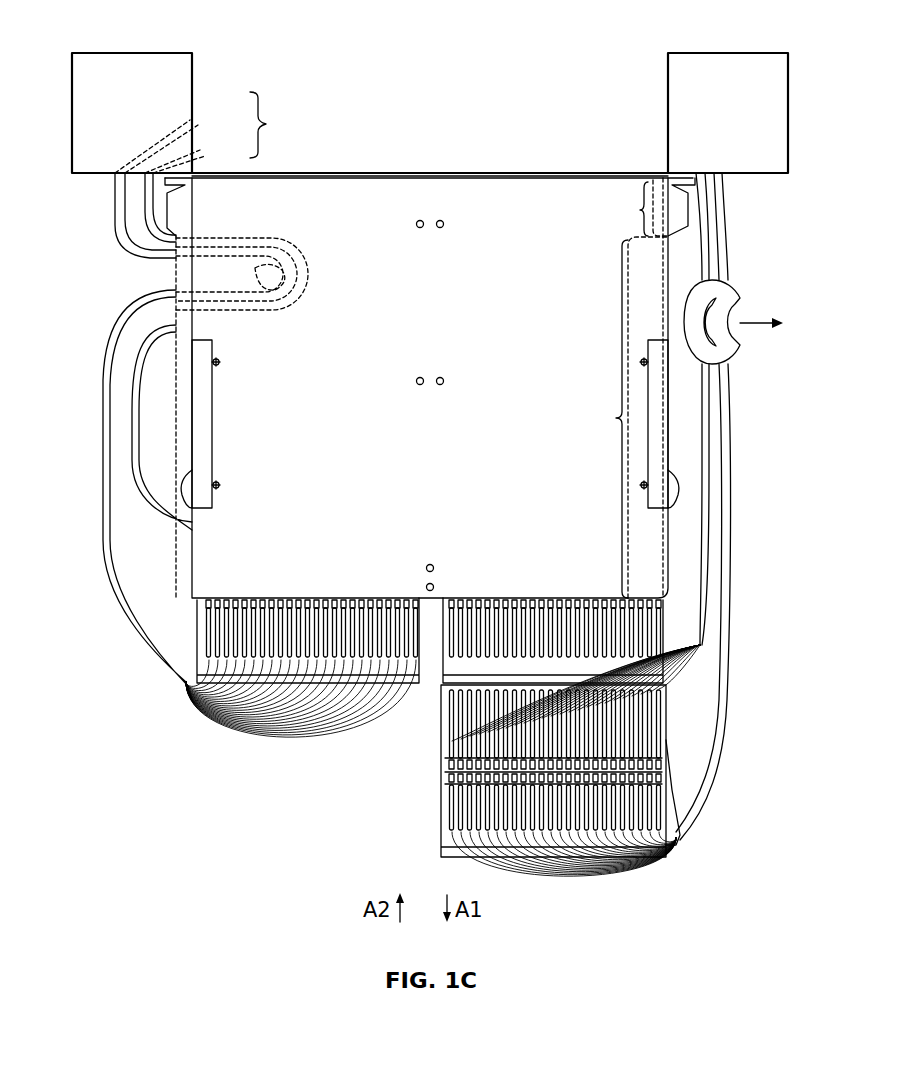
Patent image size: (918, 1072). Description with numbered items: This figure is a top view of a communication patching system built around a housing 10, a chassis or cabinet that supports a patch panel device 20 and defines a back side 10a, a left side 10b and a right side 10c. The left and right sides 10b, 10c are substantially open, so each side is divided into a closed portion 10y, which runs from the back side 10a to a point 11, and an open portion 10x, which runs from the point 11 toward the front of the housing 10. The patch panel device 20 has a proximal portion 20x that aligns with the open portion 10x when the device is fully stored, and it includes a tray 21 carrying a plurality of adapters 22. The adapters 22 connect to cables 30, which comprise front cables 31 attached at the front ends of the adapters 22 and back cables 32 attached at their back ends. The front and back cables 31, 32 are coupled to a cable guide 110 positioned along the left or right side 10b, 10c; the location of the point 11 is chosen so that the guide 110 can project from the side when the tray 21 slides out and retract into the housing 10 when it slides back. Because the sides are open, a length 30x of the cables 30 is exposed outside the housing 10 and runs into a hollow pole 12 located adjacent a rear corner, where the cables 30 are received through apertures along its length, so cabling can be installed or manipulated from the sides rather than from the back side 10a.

The housing 10 is at (394, 224).
The back side 10a is at (564, 186).
The left side 10b is at (192, 540).
The right side 10c is at (687, 430).
The open portion 10x is at (618, 417).
The closed portion 10y is at (635, 208).
The point 11 is at (668, 237).
The pole 12 is at (82, 121).
The patch panel device 20 is at (406, 694).
The proximal portion 20x is at (678, 806).
The tray 21 is at (445, 766).
The adapter 22 is at (187, 610).
The cable 30 is at (274, 125).
The length of cables 30x is at (735, 548).
The front cable 31 is at (170, 117).
The back cable 32 is at (185, 162).
The cable guide 110 is at (314, 232).